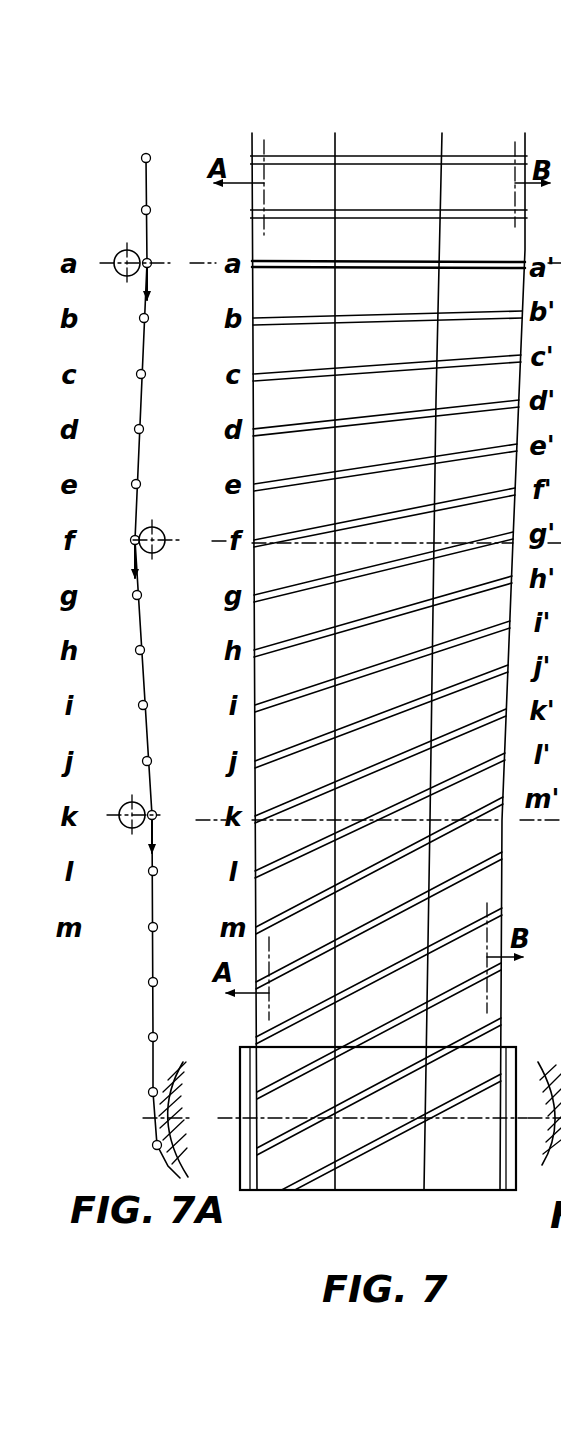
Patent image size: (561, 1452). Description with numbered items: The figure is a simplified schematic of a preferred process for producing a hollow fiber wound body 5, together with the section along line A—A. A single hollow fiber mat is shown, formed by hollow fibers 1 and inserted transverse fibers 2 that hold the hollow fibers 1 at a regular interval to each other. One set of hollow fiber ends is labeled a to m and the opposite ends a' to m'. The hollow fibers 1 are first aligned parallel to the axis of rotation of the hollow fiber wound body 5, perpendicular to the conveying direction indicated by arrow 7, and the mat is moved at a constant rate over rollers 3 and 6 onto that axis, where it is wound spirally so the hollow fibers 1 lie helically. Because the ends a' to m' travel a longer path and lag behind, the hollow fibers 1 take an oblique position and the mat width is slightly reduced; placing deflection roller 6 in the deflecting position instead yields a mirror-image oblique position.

In FIG. 7A, the hollow fibers 1 is at (146, 210).
In FIG. 7, the hollow fibers 1 is at (378, 213).
In FIG. 7A, the inserted transverse fibers 2 is at (141, 182).
In FIG. 7, the inserted transverse fibers 2 is at (249, 145).
In FIG. 7A, the roller 3 is at (120, 257).
In FIG. 7, the hollow fiber wound body 5 is at (365, 1172).
In FIG. 7A, the deflection roller 6 is at (135, 535).
In FIG. 7, the arrow 7 is at (386, 90).